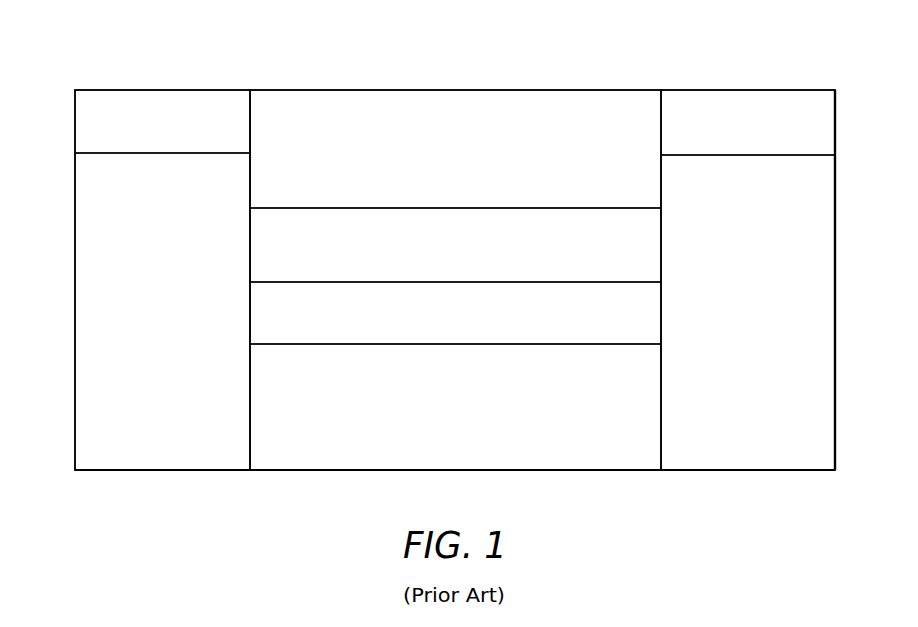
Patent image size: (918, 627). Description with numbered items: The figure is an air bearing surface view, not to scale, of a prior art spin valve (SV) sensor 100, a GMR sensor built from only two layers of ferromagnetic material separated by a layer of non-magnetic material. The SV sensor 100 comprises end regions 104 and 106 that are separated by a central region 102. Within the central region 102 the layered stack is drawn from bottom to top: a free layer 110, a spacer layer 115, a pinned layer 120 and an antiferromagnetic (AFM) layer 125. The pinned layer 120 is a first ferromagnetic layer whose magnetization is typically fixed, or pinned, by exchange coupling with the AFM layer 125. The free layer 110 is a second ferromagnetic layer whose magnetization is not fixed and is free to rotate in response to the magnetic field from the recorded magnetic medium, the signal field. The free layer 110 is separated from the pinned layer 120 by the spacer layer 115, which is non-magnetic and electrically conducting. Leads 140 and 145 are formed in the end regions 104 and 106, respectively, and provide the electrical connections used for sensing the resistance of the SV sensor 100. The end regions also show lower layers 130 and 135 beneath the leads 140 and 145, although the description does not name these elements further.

The spin valve sensor 100 is at (630, 502).
The central region 102 is at (658, 73).
The end region 104 is at (248, 73).
The end region 106 is at (835, 75).
The free layer 110 is at (655, 418).
The spacer layer 115 is at (655, 323).
The pinned layer 120 is at (655, 248).
The antiferromagnetic layer 125 is at (655, 181).
The left hard bias layer 130 is at (82, 259).
The right hard bias layer 135 is at (830, 262).
The lead 140 is at (82, 126).
The lead 145 is at (830, 128).